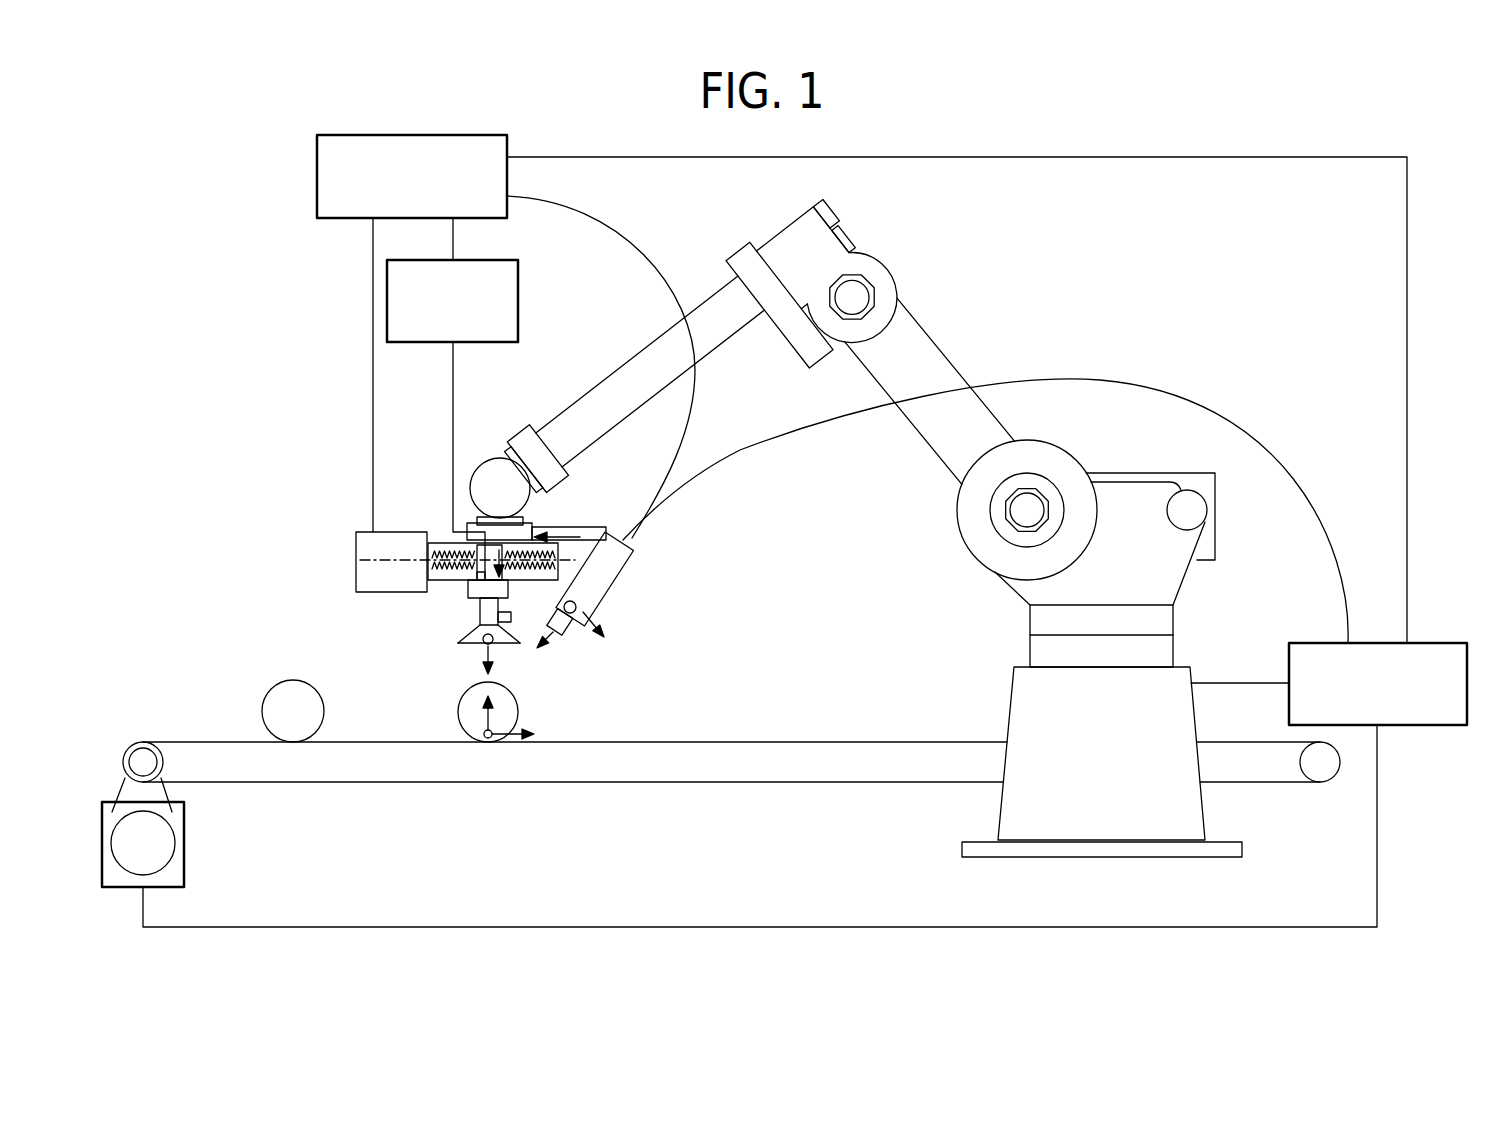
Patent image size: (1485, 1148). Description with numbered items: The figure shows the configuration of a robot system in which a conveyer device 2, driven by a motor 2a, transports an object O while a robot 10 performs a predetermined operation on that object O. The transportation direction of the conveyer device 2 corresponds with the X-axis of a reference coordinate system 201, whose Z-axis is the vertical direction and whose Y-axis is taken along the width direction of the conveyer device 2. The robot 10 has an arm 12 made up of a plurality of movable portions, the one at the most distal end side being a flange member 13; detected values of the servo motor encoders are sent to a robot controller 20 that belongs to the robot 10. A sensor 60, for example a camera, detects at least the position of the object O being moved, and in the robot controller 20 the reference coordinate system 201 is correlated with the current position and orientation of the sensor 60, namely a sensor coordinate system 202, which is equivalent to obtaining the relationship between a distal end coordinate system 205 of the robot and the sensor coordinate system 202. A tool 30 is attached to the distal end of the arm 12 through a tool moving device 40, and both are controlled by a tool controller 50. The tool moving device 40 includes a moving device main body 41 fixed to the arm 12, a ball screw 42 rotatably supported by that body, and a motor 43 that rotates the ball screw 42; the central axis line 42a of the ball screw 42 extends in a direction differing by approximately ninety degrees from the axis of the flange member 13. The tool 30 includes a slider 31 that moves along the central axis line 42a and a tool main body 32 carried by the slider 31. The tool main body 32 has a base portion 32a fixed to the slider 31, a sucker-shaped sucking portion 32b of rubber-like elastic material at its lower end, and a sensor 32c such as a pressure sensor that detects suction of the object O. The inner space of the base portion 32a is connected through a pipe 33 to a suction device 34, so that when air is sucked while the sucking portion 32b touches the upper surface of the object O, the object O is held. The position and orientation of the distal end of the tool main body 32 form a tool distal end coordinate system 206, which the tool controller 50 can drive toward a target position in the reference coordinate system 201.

The robot 10 is at (850, 529).
The arm 12 is at (905, 305).
The flange member 13 is at (468, 470).
The robot controller 20 is at (1422, 643).
The tool controller 50 is at (317, 178).
The suction device 34 is at (518, 300).
The pipe 33 is at (453, 358).
The tool moving device 40 is at (464, 602).
The moving device main body 41 is at (562, 563).
The ball screw 42 is at (437, 543).
The central axis line 42a is at (385, 557).
The motor 43 is at (356, 551).
The slider 31 is at (468, 588).
The tool main body 32 is at (428, 667).
The base portion 32a is at (461, 643).
The sucking portion 32b is at (474, 646).
The sensor 32c is at (481, 610).
The tool 30 is at (522, 666).
The sensor 60 is at (637, 548).
The conveyer device 2 is at (197, 741).
The motor 2a is at (184, 843).
The object O is at (293, 680).
The reference coordinate system 201 is at (505, 745).
The sensor coordinate system 202 is at (607, 631).
The distal end coordinate system 205 is at (532, 527).
The tool distal end coordinate system 206 is at (535, 641).